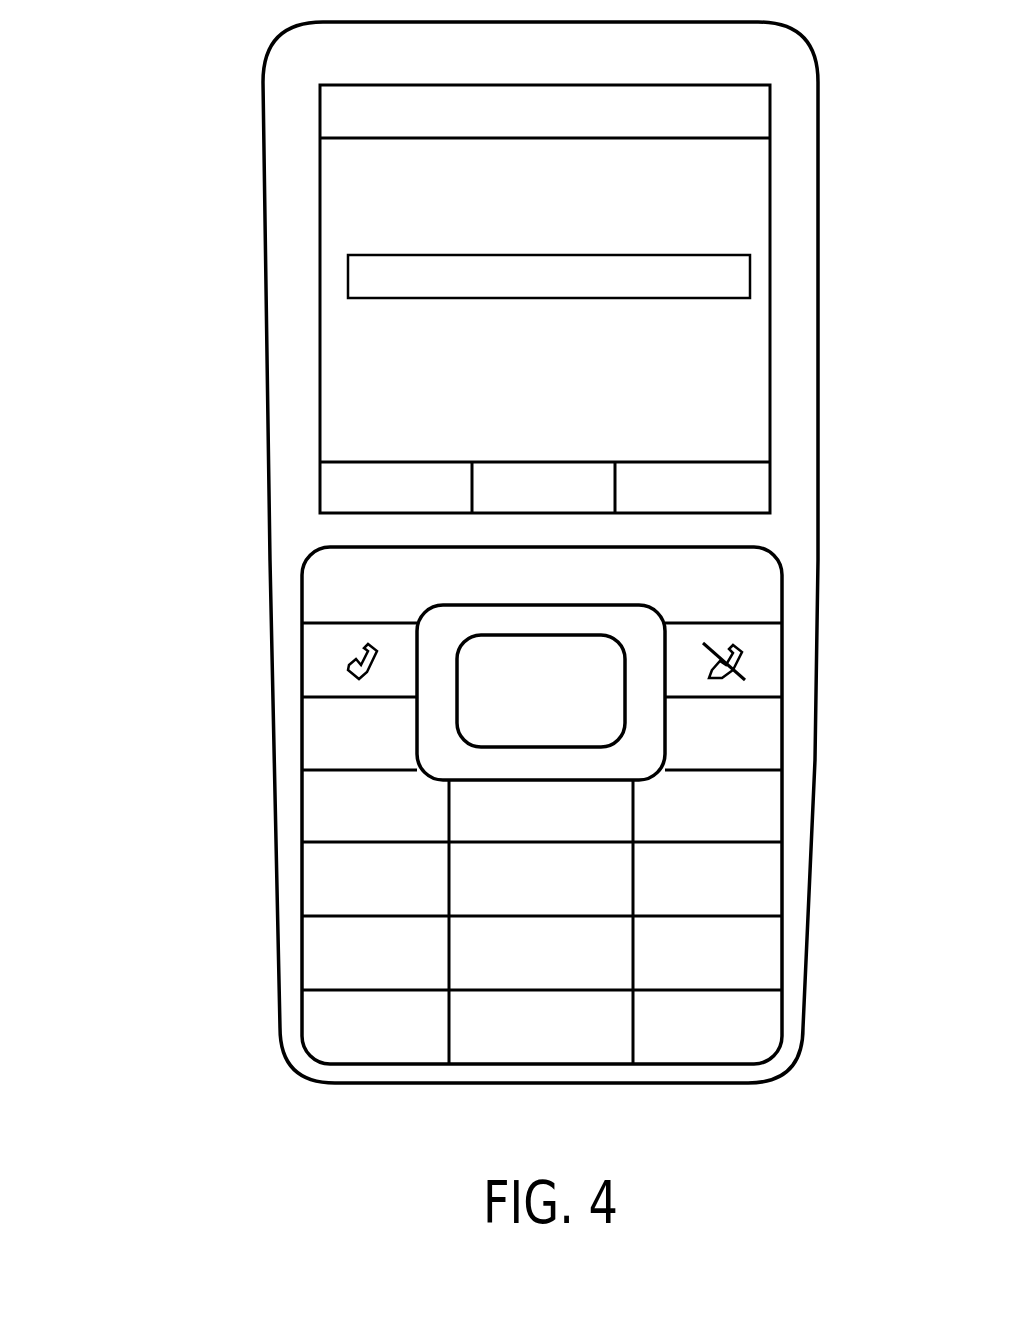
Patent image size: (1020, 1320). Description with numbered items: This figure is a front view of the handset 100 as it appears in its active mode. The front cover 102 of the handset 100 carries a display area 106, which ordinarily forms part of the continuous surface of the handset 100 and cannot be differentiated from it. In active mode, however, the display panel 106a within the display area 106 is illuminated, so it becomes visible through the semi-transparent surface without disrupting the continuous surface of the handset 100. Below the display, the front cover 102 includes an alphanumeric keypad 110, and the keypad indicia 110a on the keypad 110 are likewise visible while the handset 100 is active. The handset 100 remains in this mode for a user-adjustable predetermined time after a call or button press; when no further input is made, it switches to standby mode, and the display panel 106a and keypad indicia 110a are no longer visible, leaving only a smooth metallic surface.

The handset 100 is at (124, 118).
The front cover 102 is at (800, 672).
The display area 106 is at (320, 360).
The display panel 106a is at (737, 218).
The alphanumeric keypad 110 is at (518, 972).
The keypad indicia 110a is at (347, 897).